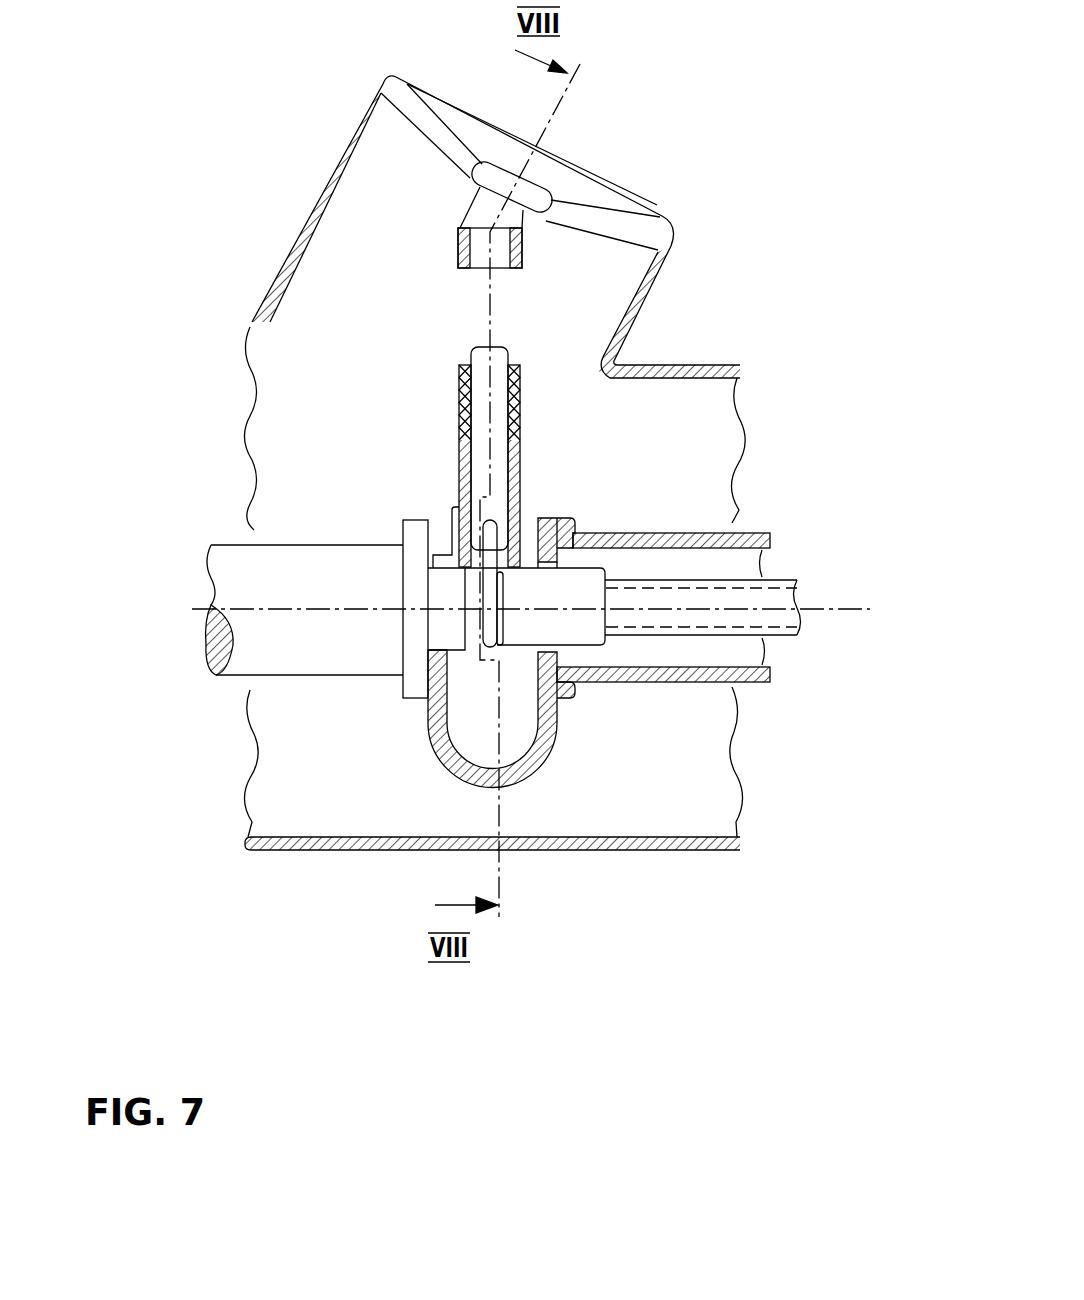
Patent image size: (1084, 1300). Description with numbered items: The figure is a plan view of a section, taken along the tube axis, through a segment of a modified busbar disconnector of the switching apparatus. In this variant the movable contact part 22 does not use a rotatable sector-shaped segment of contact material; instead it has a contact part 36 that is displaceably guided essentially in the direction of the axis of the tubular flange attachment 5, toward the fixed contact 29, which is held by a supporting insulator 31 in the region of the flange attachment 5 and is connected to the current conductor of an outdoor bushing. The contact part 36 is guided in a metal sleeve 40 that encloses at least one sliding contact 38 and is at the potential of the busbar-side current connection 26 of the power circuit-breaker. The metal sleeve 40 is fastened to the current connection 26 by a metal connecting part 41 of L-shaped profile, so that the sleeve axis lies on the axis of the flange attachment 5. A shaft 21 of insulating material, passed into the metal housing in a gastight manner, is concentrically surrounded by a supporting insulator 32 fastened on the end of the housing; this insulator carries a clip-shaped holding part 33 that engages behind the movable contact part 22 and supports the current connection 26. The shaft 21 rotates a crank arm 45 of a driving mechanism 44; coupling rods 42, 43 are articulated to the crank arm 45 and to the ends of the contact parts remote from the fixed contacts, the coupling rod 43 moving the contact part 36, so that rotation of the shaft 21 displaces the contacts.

The flange attachment 5 is at (347, 148).
The shaft 21 is at (775, 599).
The movable contact part 22 is at (502, 617).
The current connection 26 is at (275, 577).
The fixed contact 29 is at (474, 252).
The supporting insulator 31 is at (627, 227).
The supporting insulator 32 is at (722, 652).
The holding part 33 is at (538, 750).
The contact part 36 is at (497, 385).
The sliding contact 38 is at (513, 410).
The metal sleeve 40 is at (514, 476).
The connecting part 41 is at (440, 562).
The coupling rod 42 is at (494, 652).
The coupling rod 43 is at (487, 537).
The driving mechanism 44 is at (497, 638).
The crank arm 45 is at (580, 600).